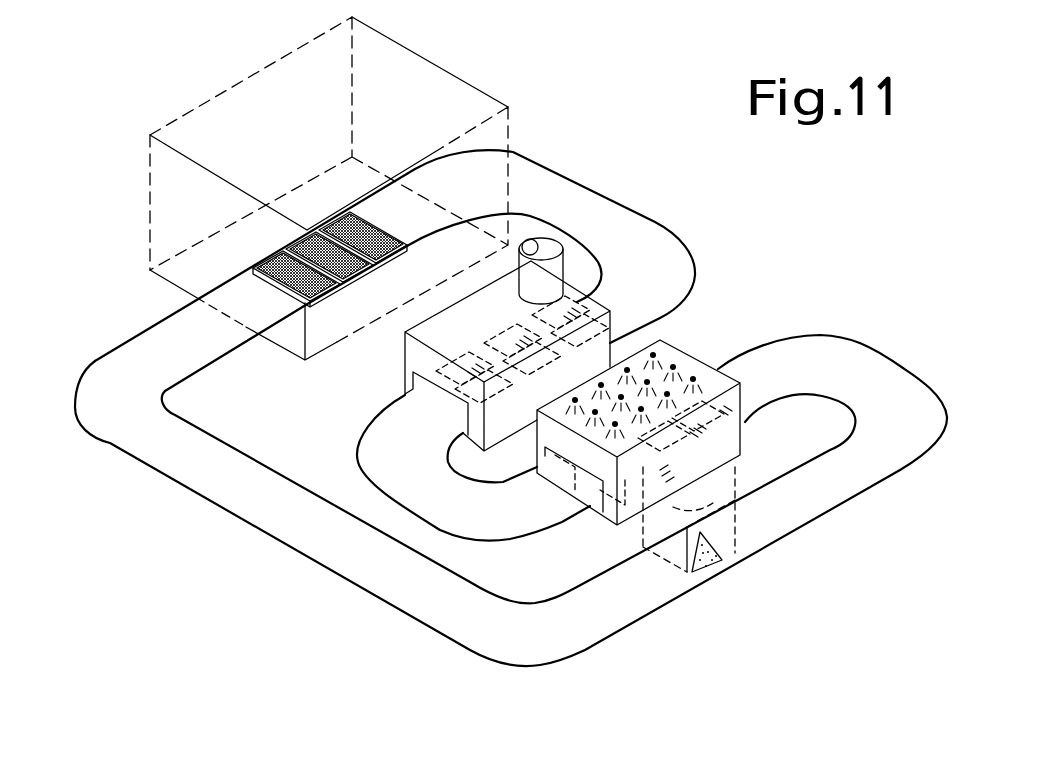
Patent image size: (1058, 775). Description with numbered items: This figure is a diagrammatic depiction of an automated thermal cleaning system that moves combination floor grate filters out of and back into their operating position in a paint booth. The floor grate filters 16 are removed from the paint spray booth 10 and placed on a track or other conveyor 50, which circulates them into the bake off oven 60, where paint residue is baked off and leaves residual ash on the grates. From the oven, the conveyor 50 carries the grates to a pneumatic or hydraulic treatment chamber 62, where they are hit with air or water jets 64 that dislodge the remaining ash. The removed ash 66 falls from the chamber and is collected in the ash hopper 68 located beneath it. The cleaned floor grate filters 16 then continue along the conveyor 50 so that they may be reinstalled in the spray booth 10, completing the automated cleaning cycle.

The paint spray booth 10 is at (435, 65).
The floor grate filters 16 is at (380, 222).
The conveyor 50 is at (327, 565).
The bake off oven 60 is at (405, 352).
The pneumatic or hydraulic treatment chamber 62 is at (701, 362).
The air or water jets 64 is at (660, 355).
The ash 66 is at (703, 533).
The ash hopper 68 is at (735, 520).